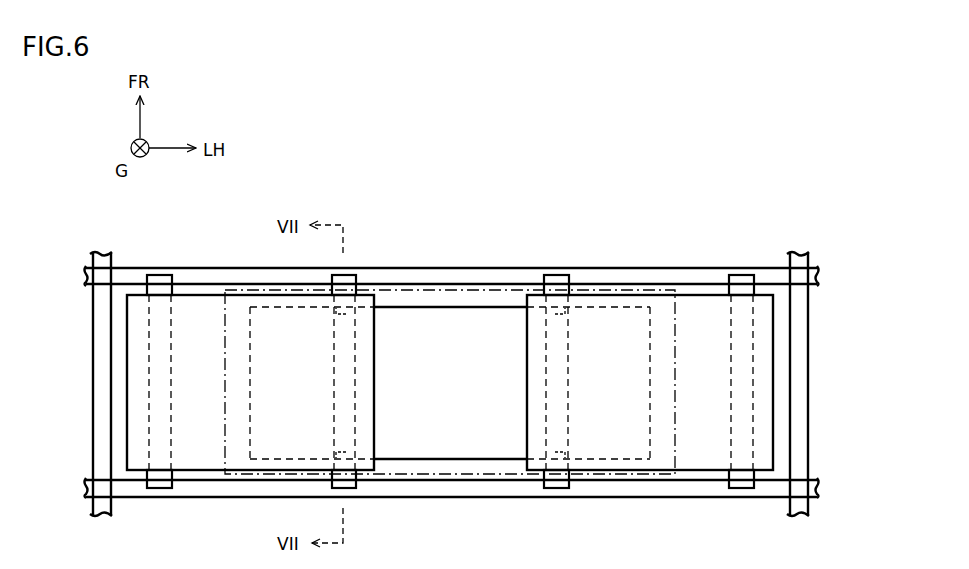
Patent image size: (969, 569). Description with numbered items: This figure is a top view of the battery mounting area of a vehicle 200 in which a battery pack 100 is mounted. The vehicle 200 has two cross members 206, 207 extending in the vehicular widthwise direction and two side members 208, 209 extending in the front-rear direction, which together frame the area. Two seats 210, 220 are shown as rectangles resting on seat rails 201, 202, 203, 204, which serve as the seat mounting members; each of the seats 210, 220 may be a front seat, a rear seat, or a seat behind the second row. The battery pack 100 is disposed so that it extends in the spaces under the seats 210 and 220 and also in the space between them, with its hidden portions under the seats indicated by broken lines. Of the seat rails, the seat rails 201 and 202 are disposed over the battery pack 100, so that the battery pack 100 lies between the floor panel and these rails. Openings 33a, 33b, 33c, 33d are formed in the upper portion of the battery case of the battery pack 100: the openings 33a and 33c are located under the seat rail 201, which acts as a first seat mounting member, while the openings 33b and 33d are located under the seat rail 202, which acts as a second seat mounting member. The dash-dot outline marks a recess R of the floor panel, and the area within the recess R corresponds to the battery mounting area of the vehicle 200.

The vehicle 200 is at (703, 179).
The cross member 206 is at (803, 278).
The cross member 207 is at (803, 488).
The side member 208 is at (100, 382).
The side member 209 is at (803, 385).
The seat 210 is at (200, 460).
The seat 220 is at (663, 460).
The battery pack 100 is at (494, 462).
The recess R is at (675, 330).
The seat rail 201 is at (352, 283).
The seat rail 202 is at (556, 285).
The seat rail 203 is at (163, 284).
The seat rail 204 is at (743, 285).
The opening 33a is at (346, 316).
The opening 33b is at (555, 316).
The opening 33c is at (347, 451).
The opening 33d is at (555, 451).